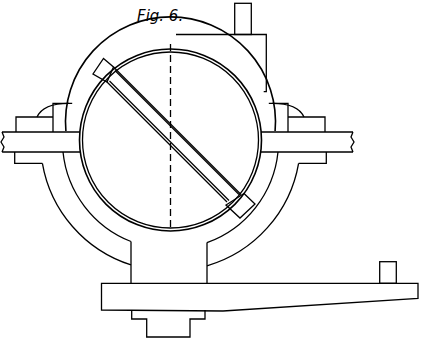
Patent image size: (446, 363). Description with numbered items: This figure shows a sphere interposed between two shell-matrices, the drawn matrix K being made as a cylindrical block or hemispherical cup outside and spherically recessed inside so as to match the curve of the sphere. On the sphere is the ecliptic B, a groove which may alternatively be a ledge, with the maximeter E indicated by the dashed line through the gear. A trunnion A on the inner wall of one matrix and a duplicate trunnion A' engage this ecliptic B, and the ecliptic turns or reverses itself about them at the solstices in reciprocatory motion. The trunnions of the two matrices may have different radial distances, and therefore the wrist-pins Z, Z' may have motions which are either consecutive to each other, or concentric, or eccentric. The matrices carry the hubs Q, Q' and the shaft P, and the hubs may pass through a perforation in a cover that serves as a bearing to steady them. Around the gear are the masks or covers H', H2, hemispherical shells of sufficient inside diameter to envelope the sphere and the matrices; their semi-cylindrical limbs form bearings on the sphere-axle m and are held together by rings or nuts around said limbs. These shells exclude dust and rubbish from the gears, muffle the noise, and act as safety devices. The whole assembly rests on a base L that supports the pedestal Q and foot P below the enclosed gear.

The matrix K is at (123, 216).
The trunnion A is at (103, 71).
The duplicate trunnion A' is at (240, 206).
The ecliptic B is at (174, 134).
The maximeter E is at (178, 136).
The hub of the matrix Q' is at (221, 63).
The wrist-pin Z is at (243, 18).
The wrist-pin Z' is at (388, 273).
The mask or cover H' is at (170, 117).
The sphere-axle m is at (177, 142).
The mask or cover H2 is at (171, 158).
The hub of the matrix Q is at (170, 217).
The base plate L is at (260, 297).
The shaft of the matrix P is at (168, 323).